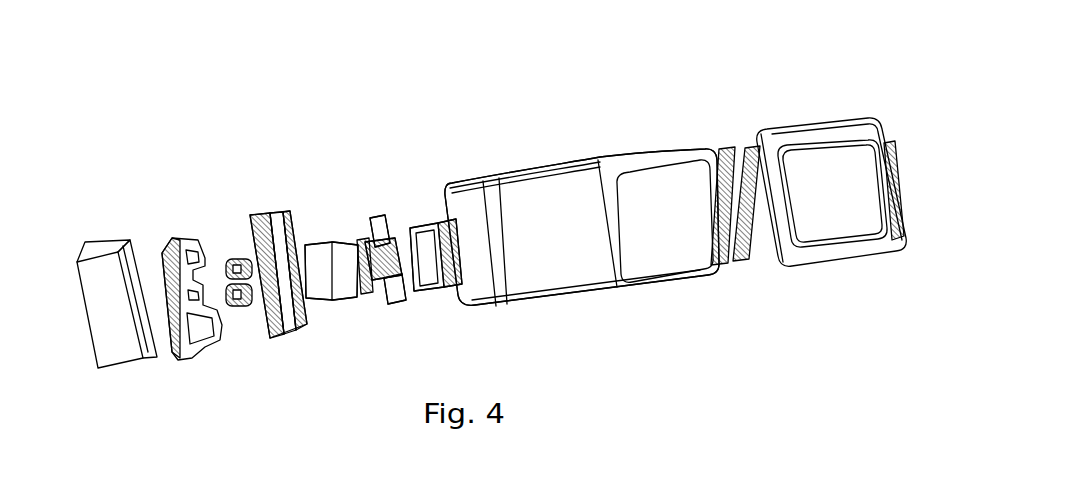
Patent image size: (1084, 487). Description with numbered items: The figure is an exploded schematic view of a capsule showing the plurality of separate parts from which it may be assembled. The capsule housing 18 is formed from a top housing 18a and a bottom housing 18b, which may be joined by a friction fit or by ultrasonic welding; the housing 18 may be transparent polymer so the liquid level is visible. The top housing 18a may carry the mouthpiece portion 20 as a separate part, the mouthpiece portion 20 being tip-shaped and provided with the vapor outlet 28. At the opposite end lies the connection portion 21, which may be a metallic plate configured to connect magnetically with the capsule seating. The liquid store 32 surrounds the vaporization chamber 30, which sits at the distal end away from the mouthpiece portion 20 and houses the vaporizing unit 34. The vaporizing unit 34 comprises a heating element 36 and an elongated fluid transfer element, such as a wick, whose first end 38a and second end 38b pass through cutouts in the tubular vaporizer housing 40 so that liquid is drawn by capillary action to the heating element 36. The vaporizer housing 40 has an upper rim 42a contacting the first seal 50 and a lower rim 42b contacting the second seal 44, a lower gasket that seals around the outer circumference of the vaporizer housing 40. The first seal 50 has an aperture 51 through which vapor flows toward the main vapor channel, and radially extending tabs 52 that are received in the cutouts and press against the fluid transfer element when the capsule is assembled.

The housing 18 is at (575, 160).
The top housing 18a is at (915, 243).
The bottom housing 18b is at (92, 375).
The mouthpiece portion 20 is at (848, 173).
The connection portion 21 is at (90, 340).
The vapor outlet 28 is at (900, 177).
The vaporization chamber 30 is at (367, 267).
The liquid store 32 is at (557, 200).
The vaporizing unit 34 is at (358, 214).
The heating element 36 is at (399, 240).
The first end 38a is at (396, 304).
The second end 38b is at (377, 216).
The vaporizer housing 40 is at (302, 310).
The upper rim 42a is at (355, 256).
The lower rim 42b is at (293, 267).
The second seal 44 is at (347, 280).
The first seal 50 is at (440, 280).
The aperture 51 is at (447, 254).
The radially extending tabs 52 is at (413, 223).